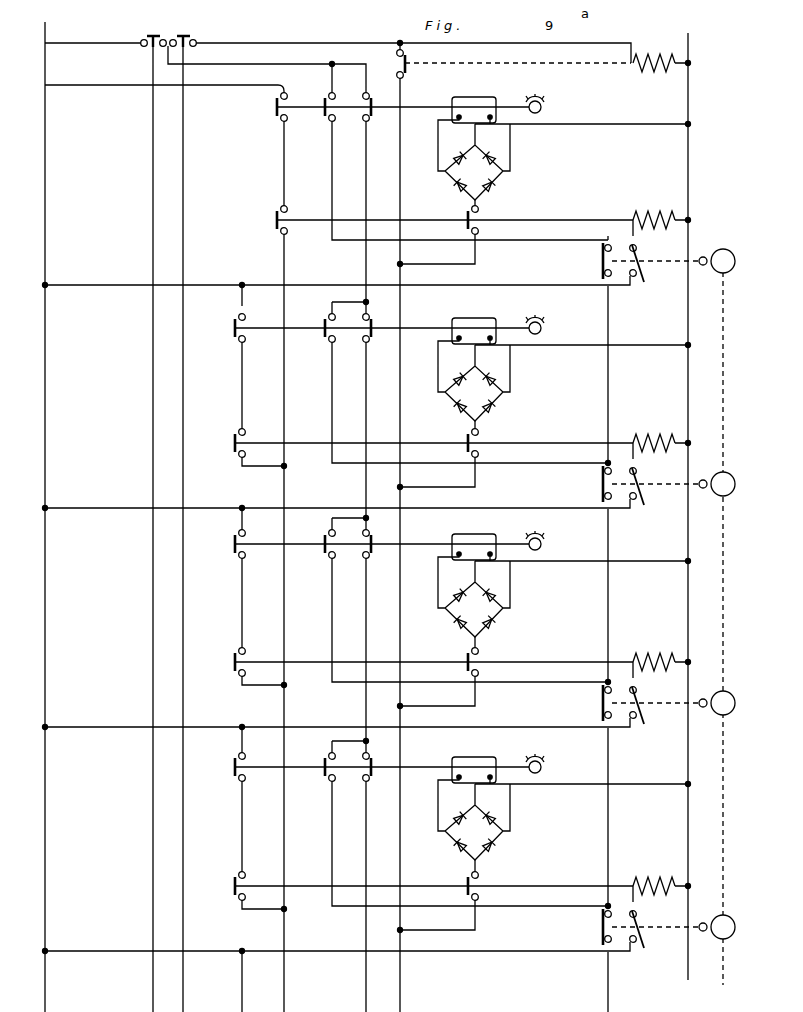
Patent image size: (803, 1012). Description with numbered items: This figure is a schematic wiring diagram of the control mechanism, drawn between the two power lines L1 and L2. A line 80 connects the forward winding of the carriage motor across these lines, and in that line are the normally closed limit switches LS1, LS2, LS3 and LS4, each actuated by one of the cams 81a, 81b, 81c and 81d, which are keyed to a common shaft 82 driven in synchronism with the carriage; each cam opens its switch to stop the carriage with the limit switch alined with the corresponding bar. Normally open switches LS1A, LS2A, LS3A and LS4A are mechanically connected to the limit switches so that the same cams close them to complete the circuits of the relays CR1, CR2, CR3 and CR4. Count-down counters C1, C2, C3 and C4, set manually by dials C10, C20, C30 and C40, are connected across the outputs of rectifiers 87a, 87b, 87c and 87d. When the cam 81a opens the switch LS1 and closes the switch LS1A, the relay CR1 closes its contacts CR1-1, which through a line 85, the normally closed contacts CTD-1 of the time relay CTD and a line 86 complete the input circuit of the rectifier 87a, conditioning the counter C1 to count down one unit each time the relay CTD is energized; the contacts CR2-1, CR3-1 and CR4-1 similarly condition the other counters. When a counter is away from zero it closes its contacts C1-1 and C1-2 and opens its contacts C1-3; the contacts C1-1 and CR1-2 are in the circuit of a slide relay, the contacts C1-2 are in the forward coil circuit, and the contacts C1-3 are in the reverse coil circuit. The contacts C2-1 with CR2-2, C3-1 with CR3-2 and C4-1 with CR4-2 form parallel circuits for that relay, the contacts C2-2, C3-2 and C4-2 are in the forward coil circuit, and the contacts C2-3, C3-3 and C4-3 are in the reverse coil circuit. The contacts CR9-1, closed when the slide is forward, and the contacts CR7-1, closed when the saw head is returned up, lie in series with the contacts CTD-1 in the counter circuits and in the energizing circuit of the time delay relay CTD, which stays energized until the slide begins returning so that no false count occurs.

The power line L1 is at (42, 509).
The power line L2 is at (688, 976).
The line 80 is at (608, 989).
The cam 81a is at (723, 249).
The cam 81b is at (723, 472).
The cam 81c is at (723, 691).
The cam 81d is at (723, 915).
The common shaft 82 is at (723, 966).
The line 85 is at (400, 193).
The line 86 is at (262, 43).
The rectifier 87a is at (505, 184).
The rectifier 87b is at (505, 407).
The rectifier 87c is at (505, 626).
The rectifier 87d is at (505, 850).
The contacts of relay CR9 CR9-1 is at (148, 48).
The contacts of relay CR7 CR7-1 is at (190, 48).
The normally closed contacts of time relay CTD CTD-1 is at (410, 69).
The time relay CTD is at (656, 72).
The counter C1 is at (480, 98).
The dial C10 is at (543, 107).
The counter contacts C1-1 is at (274, 104).
The counter contacts C1-2 is at (323, 99).
The counter contacts C1-3 is at (371, 100).
The contacts of relay CR1 CR1-2 is at (275, 217).
The contacts of relay CR1 CR1-1 is at (485, 213).
The relay CR1 is at (646, 215).
The limit switch LS1 is at (600, 265).
The switch LS1A is at (642, 277).
The counter C2 is at (480, 319).
The dial C20 is at (543, 328).
The counter contacts C2-1 is at (233, 322).
The counter contacts C2-2 is at (323, 320).
The counter contacts C2-3 is at (373, 320).
The contacts of relay CR2 CR2-2 is at (234, 439).
The contacts of relay CR2 CR2-1 is at (485, 436).
The relay CR2 is at (646, 438).
The limit switch LS2 is at (600, 488).
The switch LS2A is at (642, 500).
The counter C3 is at (480, 535).
The dial C30 is at (543, 544).
The counter contacts C3-1 is at (240, 544).
The counter contacts C3-2 is at (330, 544).
The counter contacts C3-3 is at (367, 544).
The contacts of relay CR3 CR3-2 is at (240, 662).
The contacts of relay CR3 CR3-1 is at (485, 655).
The relay CR3 is at (646, 657).
The limit switch LS3 is at (600, 707).
The switch LS3A is at (642, 719).
The counter C4 is at (480, 758).
The dial C40 is at (543, 767).
The counter contacts C4-1 is at (240, 767).
The counter contacts C4-2 is at (330, 767).
The counter contacts C4-3 is at (367, 767).
The contacts of relay CR4 CR4-2 is at (240, 886).
The contacts of relay CR4 CR4-1 is at (485, 879).
The relay CR4 is at (646, 880).
The limit switch LS4 is at (600, 931).
The switch LS4A is at (642, 943).